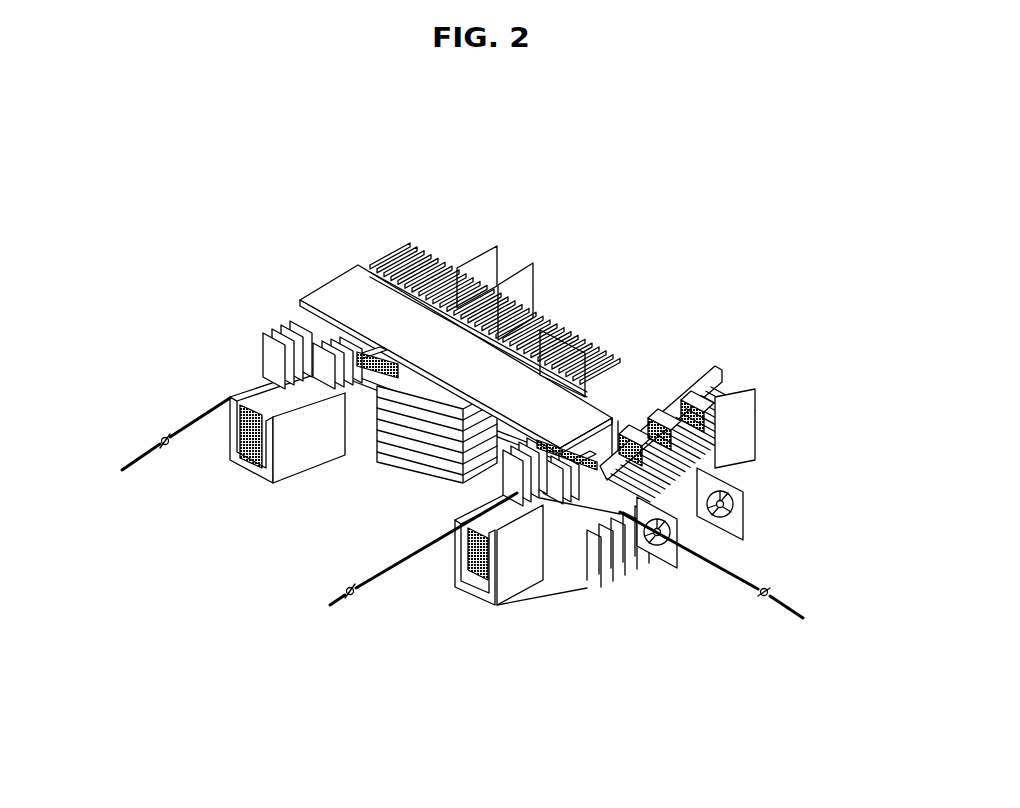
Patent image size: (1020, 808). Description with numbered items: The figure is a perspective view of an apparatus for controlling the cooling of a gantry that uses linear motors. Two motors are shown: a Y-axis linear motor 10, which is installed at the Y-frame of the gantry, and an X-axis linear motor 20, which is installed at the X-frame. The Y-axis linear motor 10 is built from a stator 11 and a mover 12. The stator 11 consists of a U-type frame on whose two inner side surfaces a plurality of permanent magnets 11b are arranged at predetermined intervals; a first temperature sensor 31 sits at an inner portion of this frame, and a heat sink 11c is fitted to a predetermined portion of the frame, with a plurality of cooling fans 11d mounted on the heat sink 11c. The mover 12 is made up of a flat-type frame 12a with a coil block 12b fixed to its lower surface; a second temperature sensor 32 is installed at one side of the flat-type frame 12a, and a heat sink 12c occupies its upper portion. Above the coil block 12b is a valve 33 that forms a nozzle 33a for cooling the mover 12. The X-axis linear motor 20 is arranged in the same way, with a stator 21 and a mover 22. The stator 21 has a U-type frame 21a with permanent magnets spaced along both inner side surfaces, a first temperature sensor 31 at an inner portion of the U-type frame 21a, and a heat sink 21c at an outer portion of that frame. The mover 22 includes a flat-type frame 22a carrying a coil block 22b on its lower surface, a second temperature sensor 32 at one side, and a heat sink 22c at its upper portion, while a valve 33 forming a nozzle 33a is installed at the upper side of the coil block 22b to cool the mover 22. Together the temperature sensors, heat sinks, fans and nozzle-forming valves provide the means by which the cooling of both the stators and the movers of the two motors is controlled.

The Y-axis linear motor 10 is at (476, 449).
The stator 11 is at (478, 449).
The permanent magnets 11b is at (465, 266).
The heat sink 11c is at (415, 248).
The cooling fans 11d is at (735, 520).
The mover 12 is at (426, 451).
The flat-type frame 12a is at (317, 405).
The coil block 12b is at (352, 330).
The heat sink 12c is at (297, 313).
The X-axis linear motor 20 is at (501, 402).
The stator 21 is at (350, 428).
The U-type frame 21a is at (538, 398).
The heat sink 21c is at (512, 335).
The mover 22 is at (501, 402).
The flat-type frame 22a is at (530, 385).
The coil block 22b is at (614, 412).
The heat sink 22c is at (410, 480).
The first temperature sensor 31 is at (690, 410).
The second temperature sensor 32 is at (630, 428).
The valve 33 is at (463, 526).
The nozzle 33a is at (215, 416).